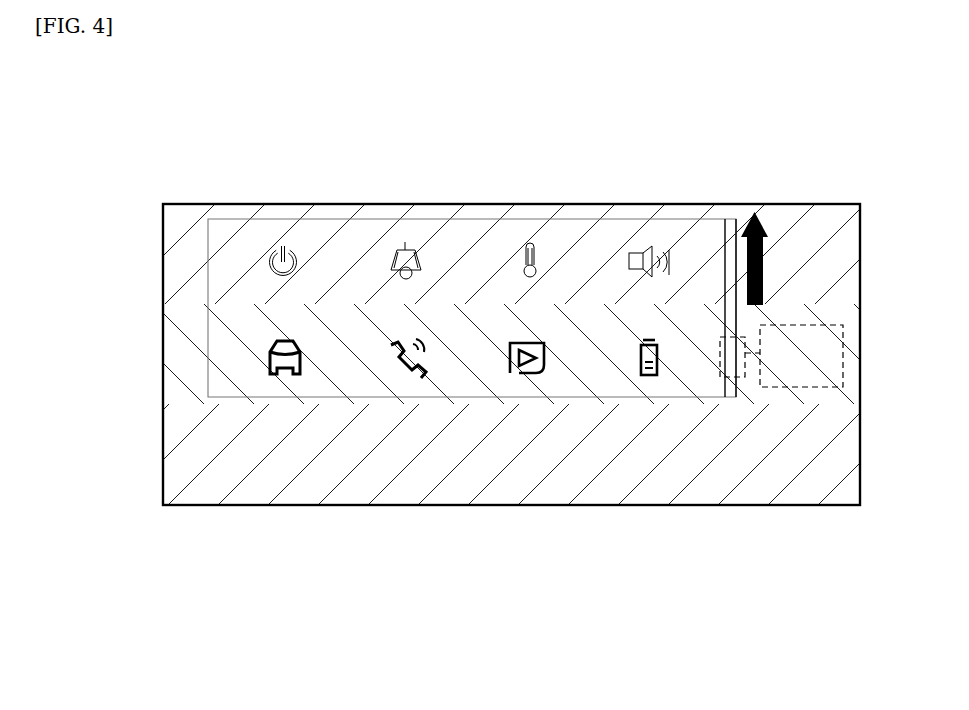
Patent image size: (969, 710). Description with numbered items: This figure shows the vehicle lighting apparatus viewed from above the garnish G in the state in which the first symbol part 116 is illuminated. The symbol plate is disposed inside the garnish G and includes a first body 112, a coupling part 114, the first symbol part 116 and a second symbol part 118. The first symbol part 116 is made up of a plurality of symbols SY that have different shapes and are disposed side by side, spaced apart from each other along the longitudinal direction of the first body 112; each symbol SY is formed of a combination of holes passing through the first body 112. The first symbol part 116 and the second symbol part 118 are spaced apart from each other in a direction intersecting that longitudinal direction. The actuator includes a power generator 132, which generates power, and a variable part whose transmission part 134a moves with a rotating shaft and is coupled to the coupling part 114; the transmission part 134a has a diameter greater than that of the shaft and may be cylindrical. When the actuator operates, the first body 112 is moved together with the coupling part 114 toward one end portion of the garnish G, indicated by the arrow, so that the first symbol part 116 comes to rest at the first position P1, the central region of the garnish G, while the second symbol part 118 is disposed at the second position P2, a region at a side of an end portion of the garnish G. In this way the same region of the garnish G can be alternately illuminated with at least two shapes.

The garnish G is at (193, 204).
The first position P1 is at (137, 345).
The second position P2 is at (137, 256).
The first body 112 is at (700, 218).
The coupling part 114 is at (730, 218).
The first symbol part 116 is at (683, 570).
The second symbol part 118 is at (670, 132).
The power generator 132 is at (820, 388).
The transmission part 134a is at (758, 387).
The symbol SY is at (288, 218).